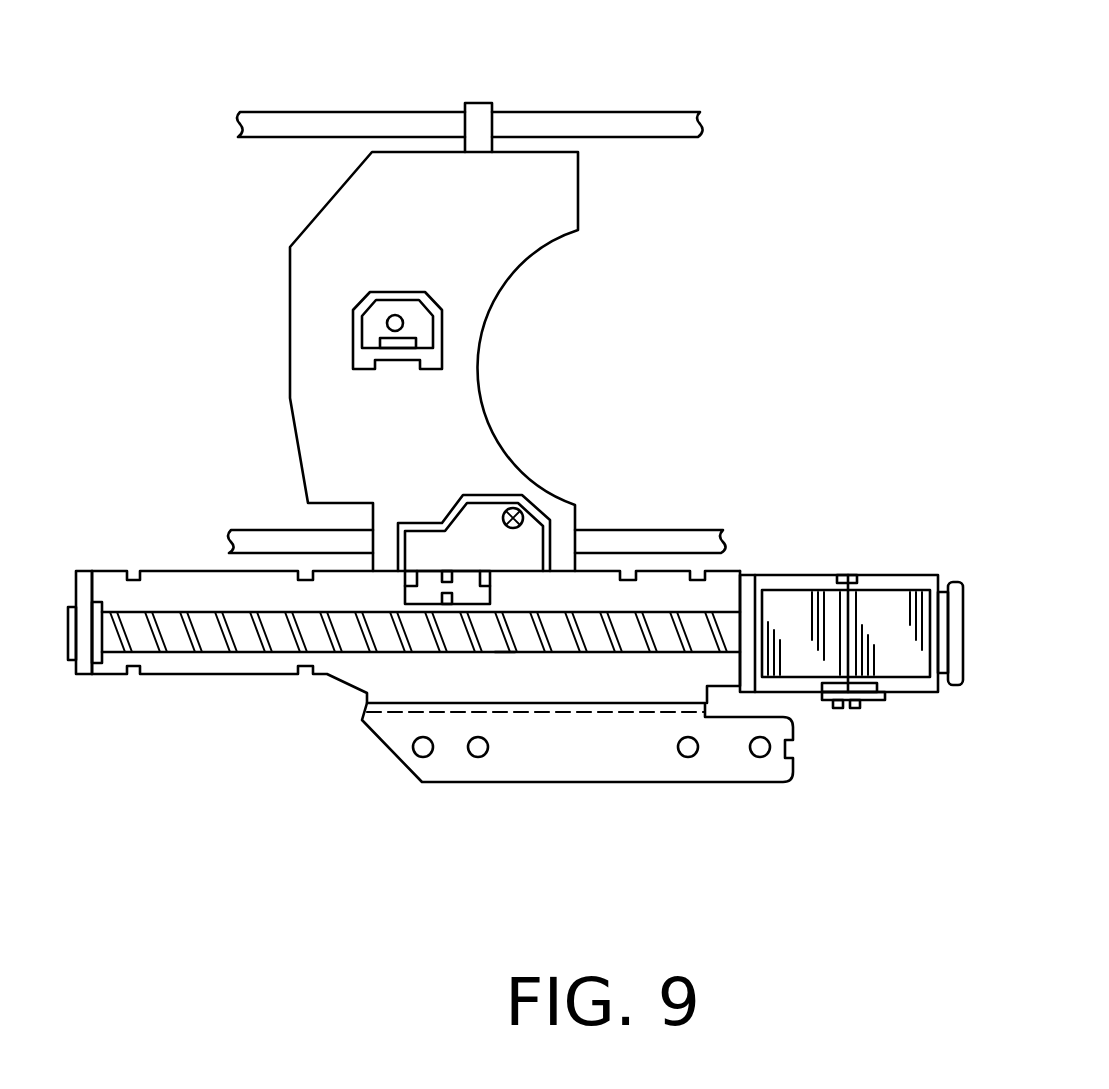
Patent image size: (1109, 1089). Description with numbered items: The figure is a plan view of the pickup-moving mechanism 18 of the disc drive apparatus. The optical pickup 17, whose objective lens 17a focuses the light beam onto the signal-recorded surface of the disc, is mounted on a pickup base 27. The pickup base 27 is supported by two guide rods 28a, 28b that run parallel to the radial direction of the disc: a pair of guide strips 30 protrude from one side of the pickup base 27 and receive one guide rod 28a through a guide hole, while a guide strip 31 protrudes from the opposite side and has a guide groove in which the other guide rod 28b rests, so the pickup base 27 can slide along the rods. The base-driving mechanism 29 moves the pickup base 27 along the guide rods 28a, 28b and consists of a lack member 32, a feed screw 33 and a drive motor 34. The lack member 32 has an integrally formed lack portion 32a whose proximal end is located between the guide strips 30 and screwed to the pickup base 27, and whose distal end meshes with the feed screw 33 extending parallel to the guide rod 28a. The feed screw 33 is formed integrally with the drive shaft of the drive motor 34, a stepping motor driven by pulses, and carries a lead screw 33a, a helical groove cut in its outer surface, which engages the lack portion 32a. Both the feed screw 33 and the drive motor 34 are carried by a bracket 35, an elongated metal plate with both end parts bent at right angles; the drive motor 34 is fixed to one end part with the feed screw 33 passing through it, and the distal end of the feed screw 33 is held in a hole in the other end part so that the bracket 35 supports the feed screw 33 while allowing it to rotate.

The optical pickup 17 is at (506, 341).
The objective lens 17a is at (395, 315).
The pickup-moving mechanism 18 is at (782, 173).
The pickup base 27 is at (288, 370).
The guide rod 28a is at (667, 530).
The guide rod 28b is at (617, 113).
The base-driving mechanism 29 is at (830, 795).
The guide strips 30 is at (380, 571).
The guide strip 31 is at (480, 103).
The lack member 32 is at (453, 550).
The lack portion 32a is at (462, 612).
The feed screw 33 is at (683, 653).
The lead screw 33a is at (505, 652).
The drive motor 34 is at (893, 575).
The bracket 35 is at (210, 676).